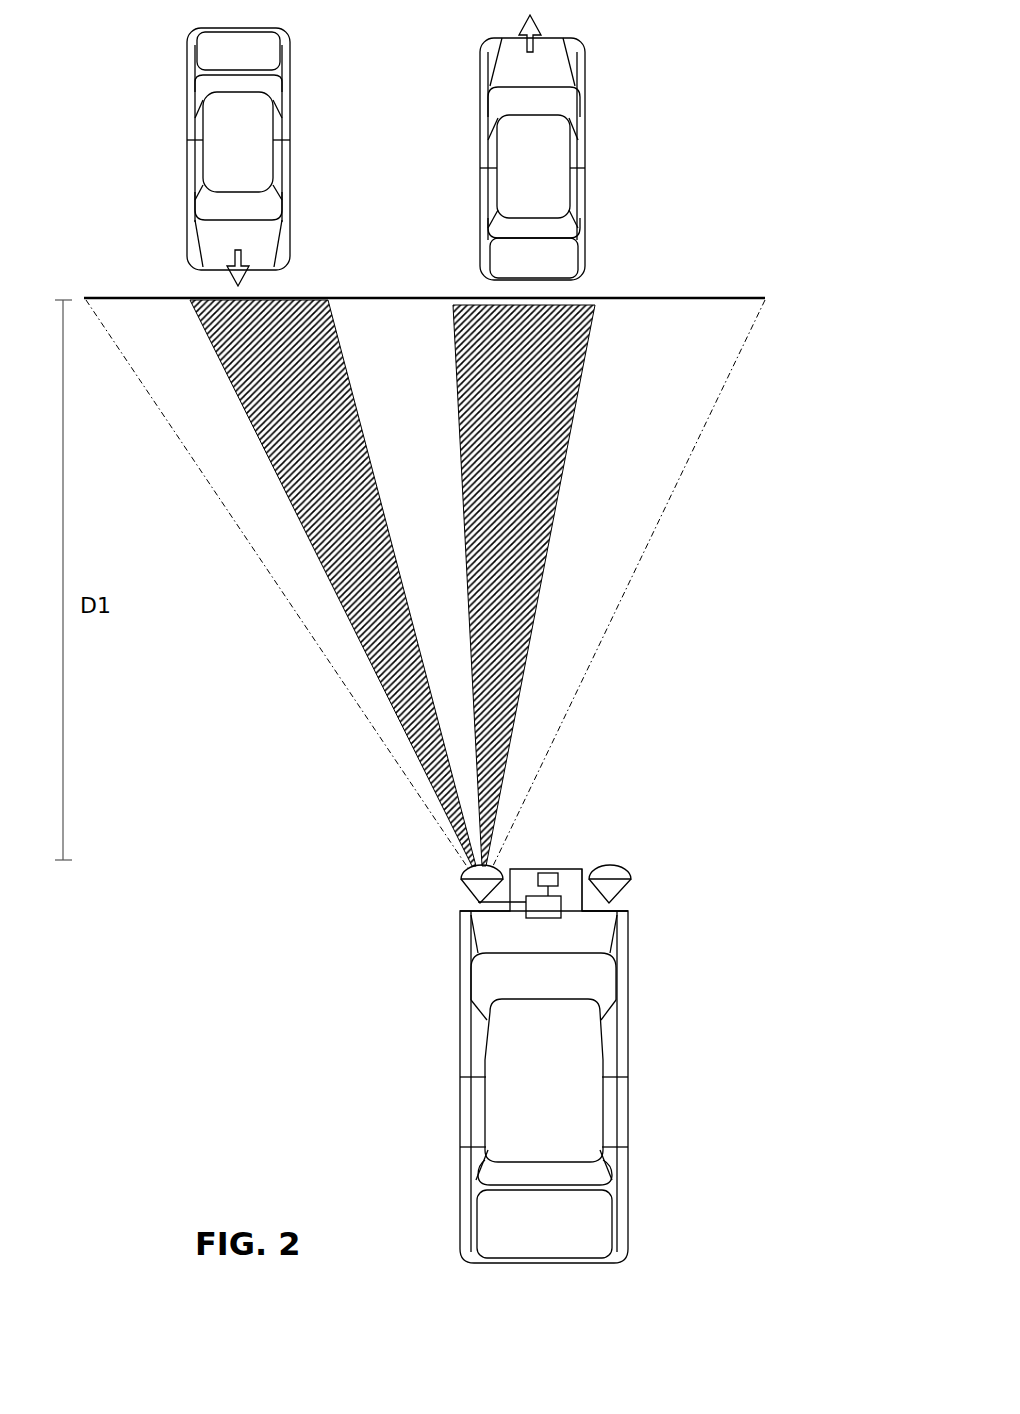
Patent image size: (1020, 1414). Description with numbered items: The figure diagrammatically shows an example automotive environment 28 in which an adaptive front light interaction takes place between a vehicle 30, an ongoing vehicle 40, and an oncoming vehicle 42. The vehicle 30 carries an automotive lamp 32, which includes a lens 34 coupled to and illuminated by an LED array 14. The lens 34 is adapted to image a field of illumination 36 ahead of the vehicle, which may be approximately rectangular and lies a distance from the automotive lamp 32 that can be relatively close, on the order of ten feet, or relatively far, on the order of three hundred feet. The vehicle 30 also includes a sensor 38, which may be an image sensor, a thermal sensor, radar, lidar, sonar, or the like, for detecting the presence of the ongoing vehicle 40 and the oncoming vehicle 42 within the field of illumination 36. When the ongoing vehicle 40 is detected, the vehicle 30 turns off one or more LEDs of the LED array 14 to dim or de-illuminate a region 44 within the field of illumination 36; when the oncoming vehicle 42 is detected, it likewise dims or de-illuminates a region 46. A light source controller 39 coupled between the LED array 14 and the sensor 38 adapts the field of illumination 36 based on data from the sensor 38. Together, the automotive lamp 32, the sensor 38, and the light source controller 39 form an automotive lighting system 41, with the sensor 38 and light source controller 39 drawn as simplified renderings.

The LED array 14 is at (466, 906).
The automotive environment 28 is at (808, 44).
The vehicle 30 is at (643, 1037).
The automotive lamp 32 is at (648, 873).
The lens 34 is at (462, 886).
The field of illumination 36 is at (766, 300).
The sensor 38 is at (553, 872).
The light source controller 39 is at (563, 912).
The ongoing vehicle 40 is at (604, 160).
The automotive lighting system 41 is at (608, 840).
The oncoming vehicle 42 is at (312, 150).
The region 44 is at (577, 416).
The region 46 is at (346, 380).